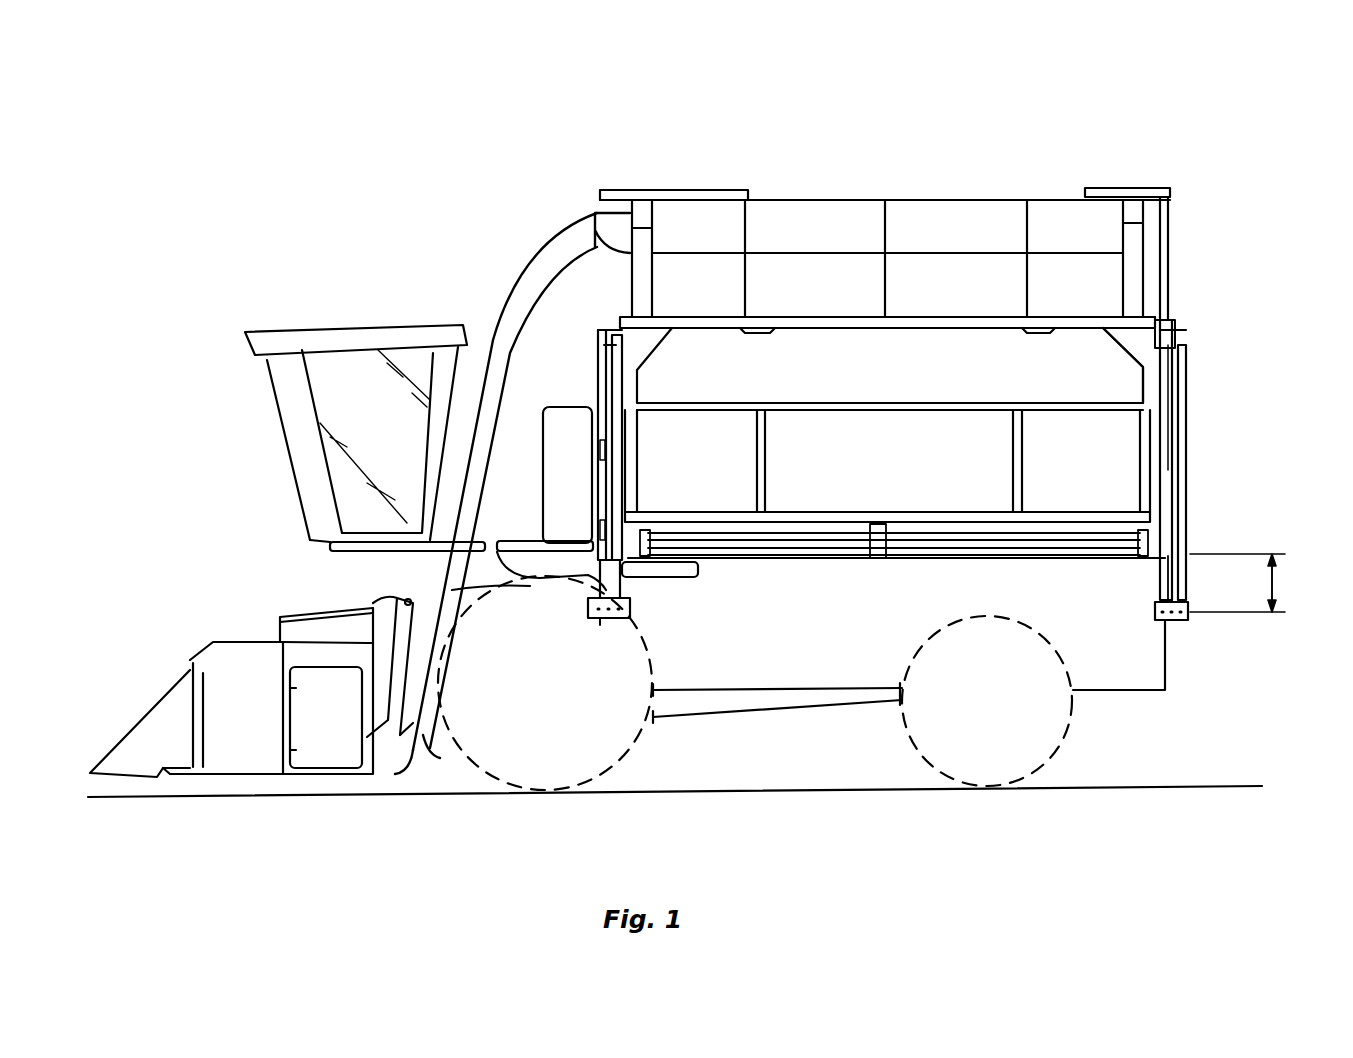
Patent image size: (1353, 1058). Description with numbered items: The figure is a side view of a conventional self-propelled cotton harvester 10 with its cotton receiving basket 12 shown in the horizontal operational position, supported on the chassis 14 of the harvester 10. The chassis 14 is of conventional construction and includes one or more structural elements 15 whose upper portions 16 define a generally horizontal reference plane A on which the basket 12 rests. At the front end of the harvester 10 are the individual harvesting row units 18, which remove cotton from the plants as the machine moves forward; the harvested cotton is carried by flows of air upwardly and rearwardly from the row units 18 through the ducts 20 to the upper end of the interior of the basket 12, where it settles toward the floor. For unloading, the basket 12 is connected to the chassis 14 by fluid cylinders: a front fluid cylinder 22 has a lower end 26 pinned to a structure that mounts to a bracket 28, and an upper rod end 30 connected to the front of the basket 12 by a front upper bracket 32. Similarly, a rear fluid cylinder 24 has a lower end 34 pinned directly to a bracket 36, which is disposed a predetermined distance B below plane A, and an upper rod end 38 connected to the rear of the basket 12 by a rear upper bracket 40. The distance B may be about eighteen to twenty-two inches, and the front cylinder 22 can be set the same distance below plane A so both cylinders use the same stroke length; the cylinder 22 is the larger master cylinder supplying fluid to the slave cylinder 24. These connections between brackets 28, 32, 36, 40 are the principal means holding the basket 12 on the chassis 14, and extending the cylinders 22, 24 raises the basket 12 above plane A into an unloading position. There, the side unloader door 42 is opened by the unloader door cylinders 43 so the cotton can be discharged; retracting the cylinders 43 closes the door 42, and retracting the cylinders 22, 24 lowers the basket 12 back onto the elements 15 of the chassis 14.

The self-propelled cotton harvester 10 is at (446, 153).
The cotton receiving basket 12 is at (868, 199).
The chassis 14 is at (1172, 690).
The structural elements 15 is at (894, 496).
The upper portions 16 is at (943, 520).
The harvesting row units 18 is at (198, 660).
The ducts 20 is at (512, 288).
The front fluid cylinder 22 is at (598, 380).
The rear fluid cylinder 24 is at (1184, 422).
The lower end 26 is at (582, 608).
The bracket 28 is at (608, 622).
The upper rod end 30 is at (600, 332).
The front upper bracket 32 is at (606, 333).
The lower end 34 is at (1185, 578).
The bracket 36 is at (1177, 622).
The upper rod end 38 is at (1184, 380).
The rear upper bracket 40 is at (1180, 350).
The side unloader door 42 is at (923, 400).
The unloader door cylinders 43 is at (1143, 358).
The reference plane A is at (1277, 553).
The predetermined distance B is at (1278, 580).